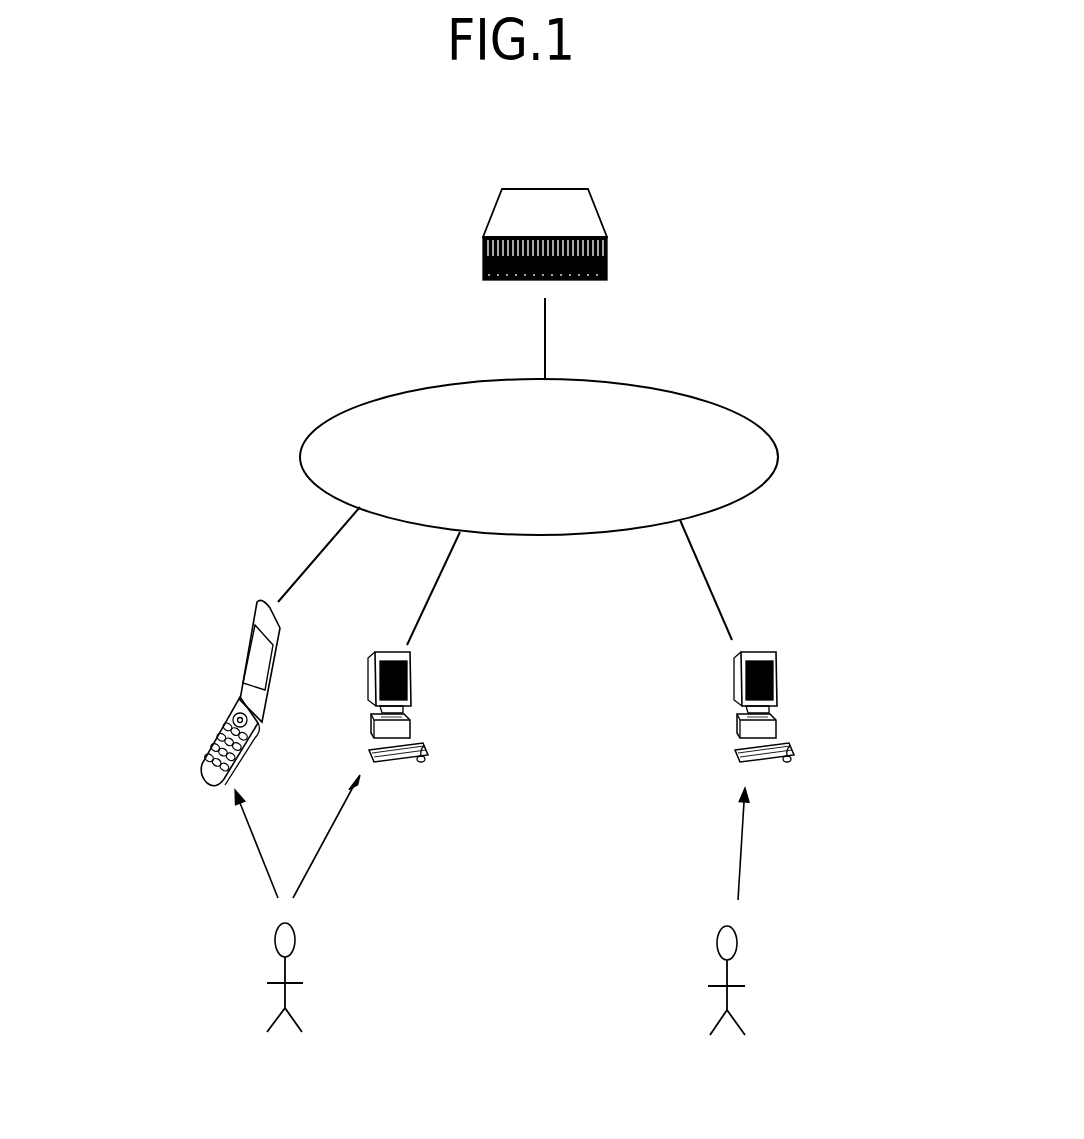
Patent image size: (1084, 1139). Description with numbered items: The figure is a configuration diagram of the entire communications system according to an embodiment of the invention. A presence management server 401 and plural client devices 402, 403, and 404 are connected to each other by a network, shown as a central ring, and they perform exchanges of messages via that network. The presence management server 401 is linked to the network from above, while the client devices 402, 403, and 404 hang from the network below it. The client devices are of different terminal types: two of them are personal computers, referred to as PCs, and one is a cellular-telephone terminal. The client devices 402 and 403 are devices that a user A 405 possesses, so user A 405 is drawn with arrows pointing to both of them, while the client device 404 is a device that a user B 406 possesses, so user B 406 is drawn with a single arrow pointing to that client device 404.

The presence management server 401 is at (563, 189).
The client device 402 is at (257, 602).
The client device 403 is at (412, 680).
The client device 404 is at (773, 678).
The user A 405 is at (305, 945).
The user B 406 is at (747, 947).